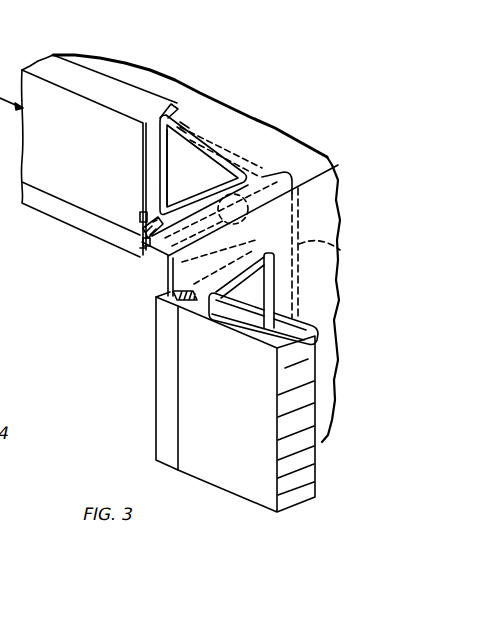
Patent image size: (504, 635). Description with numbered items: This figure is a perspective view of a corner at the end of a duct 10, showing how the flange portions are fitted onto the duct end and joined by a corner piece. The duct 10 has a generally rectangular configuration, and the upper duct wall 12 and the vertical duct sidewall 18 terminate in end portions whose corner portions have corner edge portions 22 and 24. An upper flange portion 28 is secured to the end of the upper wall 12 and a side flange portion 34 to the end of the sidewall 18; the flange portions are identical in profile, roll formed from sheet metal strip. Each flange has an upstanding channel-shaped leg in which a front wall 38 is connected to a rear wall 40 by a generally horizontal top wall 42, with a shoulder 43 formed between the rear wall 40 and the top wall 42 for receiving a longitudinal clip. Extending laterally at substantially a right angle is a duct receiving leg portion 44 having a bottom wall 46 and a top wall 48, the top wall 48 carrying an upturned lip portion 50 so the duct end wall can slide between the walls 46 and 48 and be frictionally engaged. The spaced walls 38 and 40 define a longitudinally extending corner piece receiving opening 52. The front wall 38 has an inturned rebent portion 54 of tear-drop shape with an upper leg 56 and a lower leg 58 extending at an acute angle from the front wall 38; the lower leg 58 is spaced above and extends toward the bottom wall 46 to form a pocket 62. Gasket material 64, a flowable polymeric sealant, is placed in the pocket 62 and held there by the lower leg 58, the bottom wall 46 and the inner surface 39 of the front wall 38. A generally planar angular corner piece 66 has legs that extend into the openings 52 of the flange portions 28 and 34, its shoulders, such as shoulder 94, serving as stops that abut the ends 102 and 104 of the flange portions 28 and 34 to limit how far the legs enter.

The duct 10 is at (242, 82).
The upper duct wall 12 is at (214, 127).
The vertical duct sidewall 18 is at (314, 209).
The corner edge portion 22 is at (128, 332).
The corner edge portion 24 is at (174, 266).
The upper flange portion 28 is at (63, 62).
The side flange portion 34 is at (145, 387).
The front wall 38 is at (40, 117).
The inner surface of front wall 39 is at (142, 130).
The rear wall 40 is at (181, 136).
The top wall 42 is at (80, 93).
The shoulder 43 is at (176, 104).
The duct receiving leg portion 44 is at (256, 187).
The bottom wall 46 is at (253, 219).
The top wall 48 is at (197, 191).
The upturned lip portion 50 is at (211, 147).
The corner piece receiving opening 52 is at (162, 168).
The inturned rebent portion 54 is at (150, 177).
The upper leg 56 is at (145, 212).
The lower leg 58 is at (147, 224).
The pocket 62 is at (111, 283).
The gasket material 64 is at (198, 290).
The angular corner piece 66 is at (339, 254).
The shoulder 94 is at (264, 388).
The end of flange portion 102 is at (100, 263).
The end of flange portion 104 is at (157, 299).